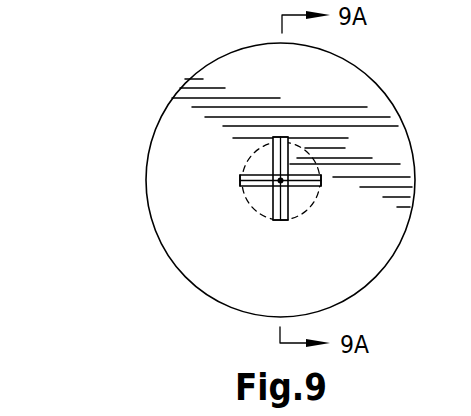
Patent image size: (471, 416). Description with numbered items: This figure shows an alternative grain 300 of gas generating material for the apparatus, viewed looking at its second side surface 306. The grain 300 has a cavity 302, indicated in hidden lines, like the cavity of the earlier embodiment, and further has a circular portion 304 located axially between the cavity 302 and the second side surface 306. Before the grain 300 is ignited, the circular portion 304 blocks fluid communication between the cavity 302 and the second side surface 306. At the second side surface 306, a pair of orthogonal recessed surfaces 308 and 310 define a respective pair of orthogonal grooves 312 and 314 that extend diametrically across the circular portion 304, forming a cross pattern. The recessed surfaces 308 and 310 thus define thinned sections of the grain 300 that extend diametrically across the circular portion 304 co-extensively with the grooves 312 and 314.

The grain 300 is at (135, 57).
The cavity 302 is at (259, 131).
The circular portion 304 is at (260, 157).
The second side surface 306 is at (176, 128).
The recessed surface 308 is at (289, 200).
The recessed surface 310 is at (262, 197).
The groove 312 is at (281, 233).
The groove 314 is at (235, 192).